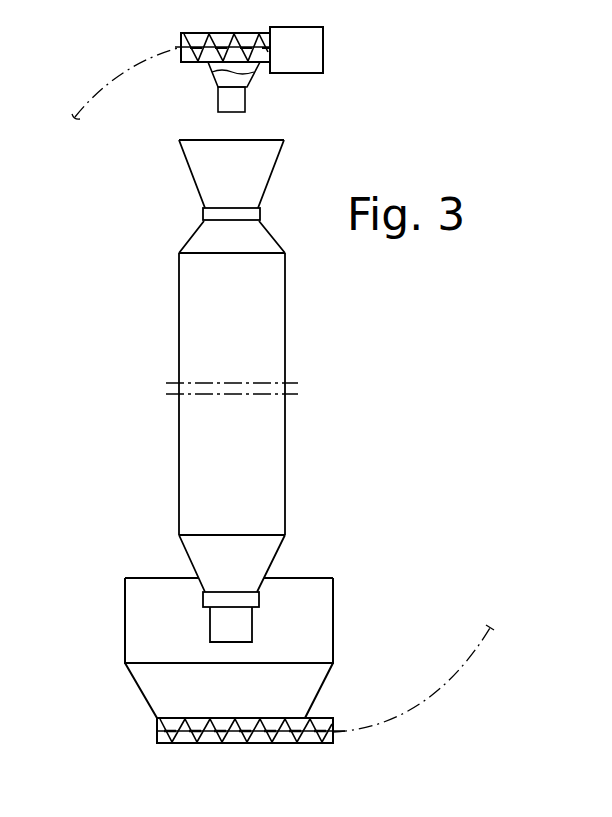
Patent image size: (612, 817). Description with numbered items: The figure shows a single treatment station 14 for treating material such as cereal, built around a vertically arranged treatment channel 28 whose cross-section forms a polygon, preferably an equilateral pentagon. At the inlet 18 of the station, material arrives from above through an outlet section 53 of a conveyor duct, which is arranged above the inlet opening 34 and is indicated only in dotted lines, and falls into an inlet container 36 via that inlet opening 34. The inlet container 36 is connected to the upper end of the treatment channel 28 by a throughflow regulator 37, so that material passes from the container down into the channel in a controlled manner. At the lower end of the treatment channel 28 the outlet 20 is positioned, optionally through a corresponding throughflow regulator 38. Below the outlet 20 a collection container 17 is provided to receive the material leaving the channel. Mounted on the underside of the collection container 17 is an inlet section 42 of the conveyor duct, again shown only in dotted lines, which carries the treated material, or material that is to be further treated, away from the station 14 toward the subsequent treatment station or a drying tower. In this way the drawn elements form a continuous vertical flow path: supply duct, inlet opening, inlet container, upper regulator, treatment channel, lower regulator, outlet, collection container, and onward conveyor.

The treatment station 14 is at (219, 433).
The collection container 17 is at (335, 628).
The inlet 18 is at (234, 164).
The outlet 20 is at (220, 630).
The treatment channel 28 is at (285, 320).
The inlet opening 34 is at (263, 139).
The inlet container 36 is at (266, 165).
The throughflow regulator 37 is at (261, 214).
The throughflow regulator 38 is at (253, 602).
The inlet section of the conveyor duct 42 is at (223, 745).
The outlet section of the conveyor duct 53 is at (223, 78).